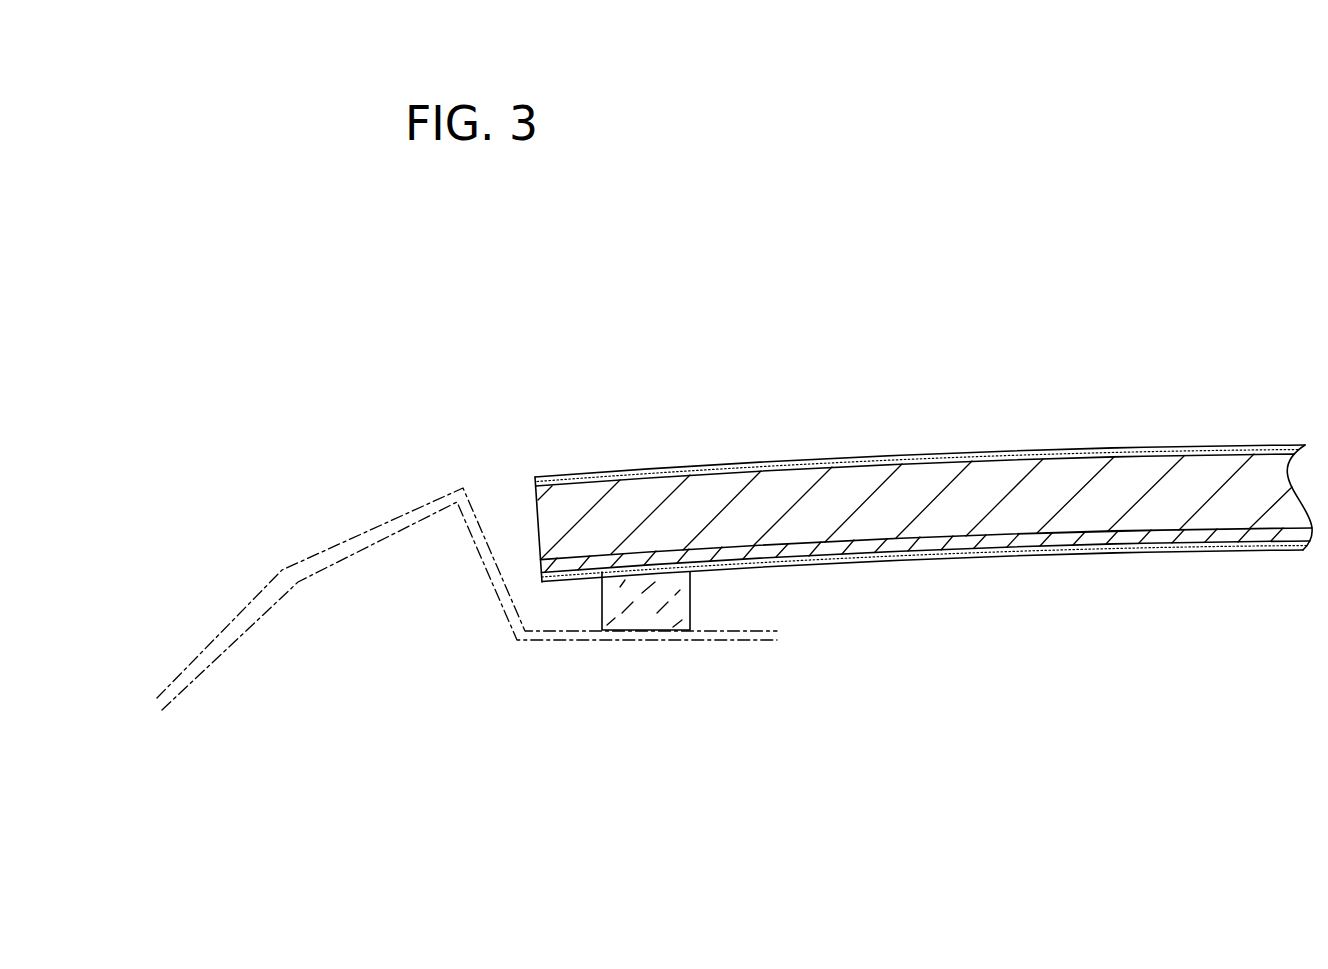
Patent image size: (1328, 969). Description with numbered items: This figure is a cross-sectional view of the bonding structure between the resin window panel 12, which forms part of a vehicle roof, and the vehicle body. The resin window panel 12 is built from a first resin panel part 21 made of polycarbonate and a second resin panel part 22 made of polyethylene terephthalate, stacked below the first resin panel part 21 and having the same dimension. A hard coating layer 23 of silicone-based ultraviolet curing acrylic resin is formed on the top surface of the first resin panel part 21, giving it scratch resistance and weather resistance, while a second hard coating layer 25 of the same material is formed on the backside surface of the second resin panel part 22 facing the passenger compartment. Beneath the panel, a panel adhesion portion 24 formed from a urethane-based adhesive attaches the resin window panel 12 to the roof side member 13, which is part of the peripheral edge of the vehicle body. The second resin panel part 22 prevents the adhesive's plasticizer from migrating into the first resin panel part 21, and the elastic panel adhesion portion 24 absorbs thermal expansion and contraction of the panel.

The resin window panel 12 is at (923, 460).
The roof side member 13 is at (398, 517).
The first resin panel part 21 is at (777, 498).
The second resin panel part 22 is at (853, 550).
The hard coating layer 23 is at (897, 456).
The panel adhesion portion 24 is at (648, 613).
The hard coating layer 25 is at (1068, 555).